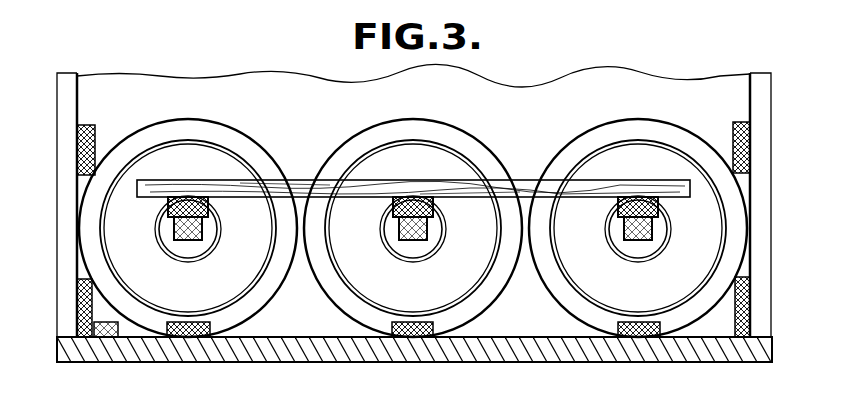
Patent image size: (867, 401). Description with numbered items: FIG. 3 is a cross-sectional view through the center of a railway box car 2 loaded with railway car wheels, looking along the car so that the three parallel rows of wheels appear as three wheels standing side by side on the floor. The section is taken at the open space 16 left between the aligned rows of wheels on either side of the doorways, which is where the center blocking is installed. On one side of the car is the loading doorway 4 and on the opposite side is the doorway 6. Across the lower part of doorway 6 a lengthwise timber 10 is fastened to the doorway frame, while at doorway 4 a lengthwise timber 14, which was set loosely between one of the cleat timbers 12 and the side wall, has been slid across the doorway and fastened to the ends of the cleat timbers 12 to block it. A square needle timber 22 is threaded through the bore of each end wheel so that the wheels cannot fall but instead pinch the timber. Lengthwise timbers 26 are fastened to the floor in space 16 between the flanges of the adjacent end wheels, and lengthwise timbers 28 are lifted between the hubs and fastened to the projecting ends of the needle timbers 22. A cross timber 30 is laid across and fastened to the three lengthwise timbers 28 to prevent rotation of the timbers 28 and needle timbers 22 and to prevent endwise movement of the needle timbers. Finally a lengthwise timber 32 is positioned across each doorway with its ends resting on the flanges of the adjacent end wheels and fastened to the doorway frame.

The railway box car 2 is at (532, 356).
The doorway 4 is at (61, 246).
The doorway 6 is at (762, 239).
The lengthwise timber 10 is at (752, 302).
The cleat timbers 12 is at (127, 339).
The lengthwise timber 14 is at (77, 305).
The open space 16 is at (309, 313).
The square needle timber 22 is at (173, 232).
The lengthwise timbers 26 is at (188, 322).
The lengthwise timbers 28 is at (211, 207).
The cross timbers 30 is at (521, 181).
The lengthwise timber 32 is at (91, 124).